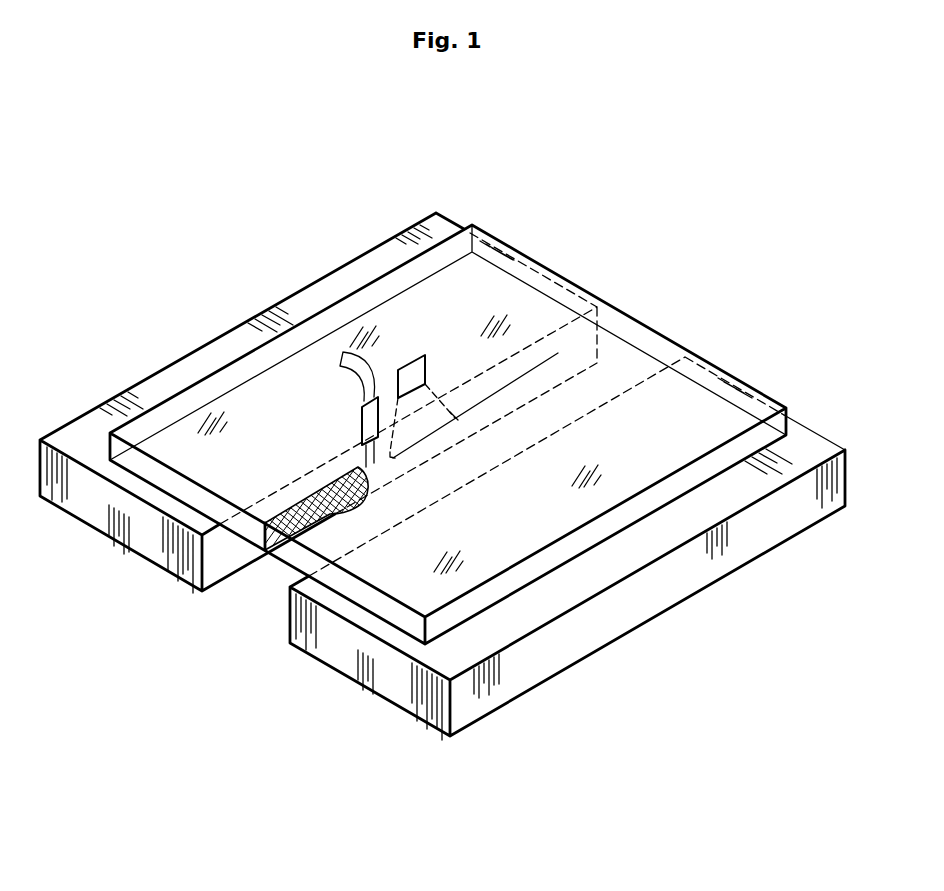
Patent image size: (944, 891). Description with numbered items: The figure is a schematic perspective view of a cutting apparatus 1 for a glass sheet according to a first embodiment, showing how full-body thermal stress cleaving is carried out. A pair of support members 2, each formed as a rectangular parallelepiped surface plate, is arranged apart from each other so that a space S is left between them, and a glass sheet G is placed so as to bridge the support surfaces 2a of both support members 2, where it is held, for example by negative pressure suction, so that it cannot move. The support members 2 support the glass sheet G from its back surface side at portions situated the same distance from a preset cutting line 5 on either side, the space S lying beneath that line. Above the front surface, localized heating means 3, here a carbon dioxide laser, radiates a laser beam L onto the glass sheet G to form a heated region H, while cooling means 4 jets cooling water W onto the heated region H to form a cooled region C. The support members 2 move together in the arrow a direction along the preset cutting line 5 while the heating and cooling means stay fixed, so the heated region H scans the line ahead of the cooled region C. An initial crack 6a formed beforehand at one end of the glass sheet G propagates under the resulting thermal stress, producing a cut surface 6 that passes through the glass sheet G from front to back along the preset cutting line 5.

The cutting apparatus 1 is at (600, 203).
The support member 2 is at (100, 511).
The support surface 2a is at (202, 365).
The localized heating means 3 is at (415, 358).
The cooling means 4 is at (358, 402).
The preset cutting line 5 is at (562, 348).
The cut surface 6 is at (323, 500).
The initial crack 6a is at (280, 512).
The glass sheet G is at (508, 296).
The laser beam L is at (450, 413).
The cooling water W is at (360, 463).
The heated region H is at (430, 442).
The cooled region C is at (377, 468).
The space S is at (263, 604).
The arrow direction a is at (270, 563).